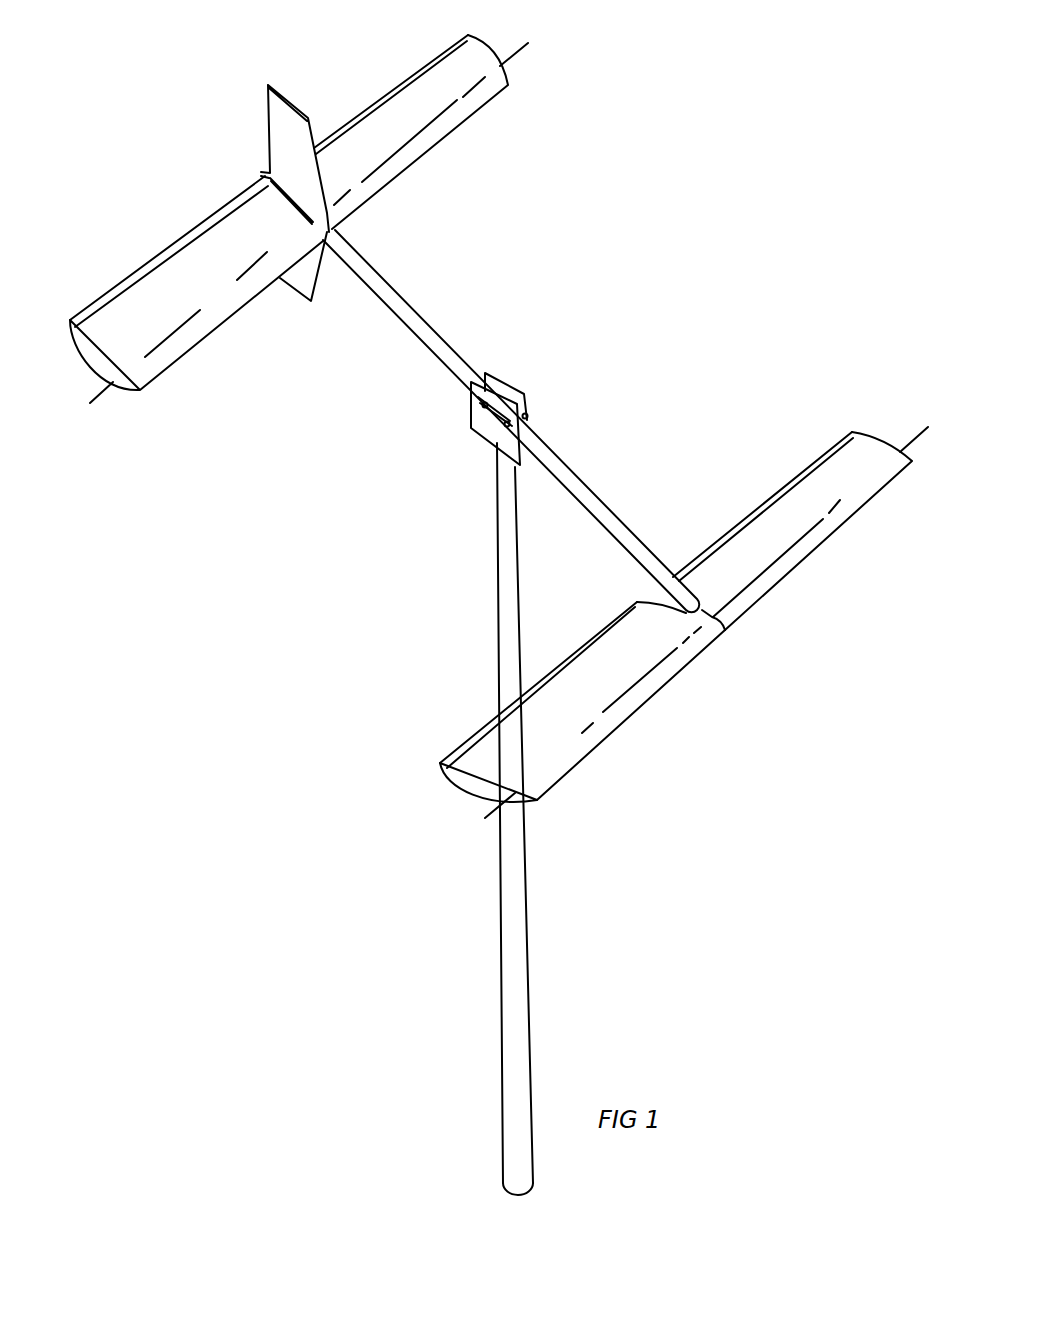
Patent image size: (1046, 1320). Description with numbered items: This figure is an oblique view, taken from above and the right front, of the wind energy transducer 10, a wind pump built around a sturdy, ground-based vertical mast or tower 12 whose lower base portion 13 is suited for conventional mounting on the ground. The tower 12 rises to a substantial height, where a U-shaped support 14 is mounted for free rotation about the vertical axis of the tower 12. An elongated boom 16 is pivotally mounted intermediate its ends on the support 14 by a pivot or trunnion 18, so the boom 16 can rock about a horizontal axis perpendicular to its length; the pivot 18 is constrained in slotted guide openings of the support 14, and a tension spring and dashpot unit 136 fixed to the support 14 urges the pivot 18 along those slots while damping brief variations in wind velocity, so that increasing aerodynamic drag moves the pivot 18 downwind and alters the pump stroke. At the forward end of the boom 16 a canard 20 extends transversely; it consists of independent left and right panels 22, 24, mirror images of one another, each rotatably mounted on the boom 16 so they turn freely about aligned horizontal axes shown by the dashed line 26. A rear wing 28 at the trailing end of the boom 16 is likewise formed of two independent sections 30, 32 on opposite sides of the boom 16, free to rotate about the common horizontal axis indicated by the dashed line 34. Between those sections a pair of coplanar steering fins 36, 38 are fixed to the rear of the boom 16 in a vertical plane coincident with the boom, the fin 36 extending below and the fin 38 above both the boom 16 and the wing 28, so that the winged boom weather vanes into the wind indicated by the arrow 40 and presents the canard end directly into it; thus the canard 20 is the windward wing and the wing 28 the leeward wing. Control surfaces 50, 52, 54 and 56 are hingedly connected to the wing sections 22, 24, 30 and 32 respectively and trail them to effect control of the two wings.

The wind energy transducer 10 is at (674, 236).
The vertical mast or tower 12 is at (522, 945).
The lower base portion 13 is at (516, 1167).
The support 14 is at (485, 430).
The boom 16 is at (565, 469).
The pivot or trunnion 18 is at (478, 402).
The forward wing or canard 20 is at (684, 689).
The left panel of canard 22 is at (818, 478).
The right panel of canard 24 is at (608, 653).
The canard rotation axis 26 is at (563, 748).
The rear wing or airfoil 28 is at (220, 398).
The rear wing section 30 is at (445, 97).
The rear wing section 32 is at (213, 278).
The rear wing rotation axis 34 is at (383, 163).
The lower steering fin 36 is at (313, 273).
The upper steering fin 38 is at (300, 128).
The wind direction arrow 40 is at (837, 668).
The control surface 50 is at (753, 507).
The control surface 52 is at (563, 661).
The control surface 54 is at (438, 52).
The control surface 56 is at (193, 229).
The tension spring and dashpot unit 136 is at (509, 407).